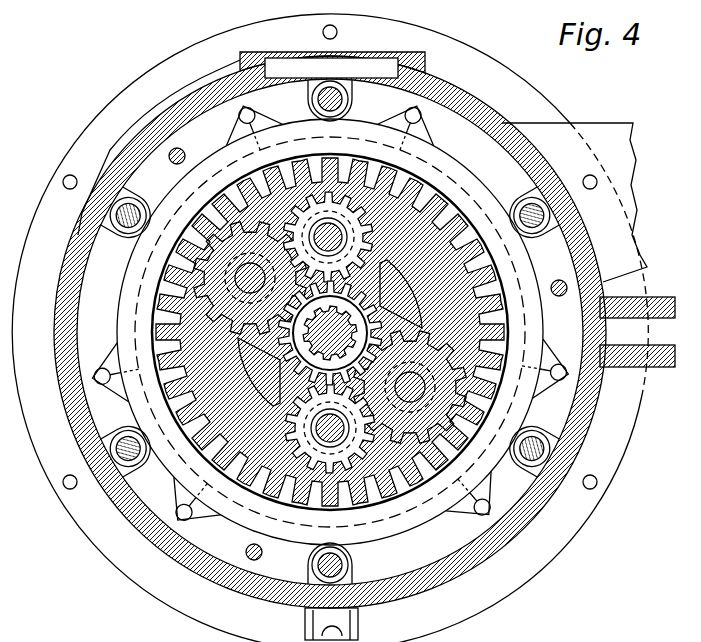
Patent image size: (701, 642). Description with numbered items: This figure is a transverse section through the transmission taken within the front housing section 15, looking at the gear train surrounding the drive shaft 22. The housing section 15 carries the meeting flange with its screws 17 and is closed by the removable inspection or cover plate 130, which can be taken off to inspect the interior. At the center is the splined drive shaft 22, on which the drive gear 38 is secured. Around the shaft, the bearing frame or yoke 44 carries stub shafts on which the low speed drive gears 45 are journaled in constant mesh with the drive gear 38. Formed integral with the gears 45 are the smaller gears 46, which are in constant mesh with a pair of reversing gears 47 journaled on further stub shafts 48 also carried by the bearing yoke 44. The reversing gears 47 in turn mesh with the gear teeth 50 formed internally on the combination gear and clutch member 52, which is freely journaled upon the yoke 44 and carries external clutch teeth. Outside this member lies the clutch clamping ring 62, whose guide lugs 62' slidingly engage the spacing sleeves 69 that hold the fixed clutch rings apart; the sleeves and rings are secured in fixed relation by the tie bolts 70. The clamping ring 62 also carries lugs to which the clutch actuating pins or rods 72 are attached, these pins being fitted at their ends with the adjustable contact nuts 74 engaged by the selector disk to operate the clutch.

The front housing section 15 is at (553, 500).
The screws 17 is at (597, 483).
The drive shaft 22 is at (349, 316).
The drive gear 38 is at (394, 318).
The bearing frame or yoke 44 is at (384, 312).
The low speed drive gears 45 is at (398, 200).
The smaller gears 46 is at (292, 437).
The reversing gears 47 is at (232, 316).
The stub shafts 48 is at (246, 286).
The internal gear teeth 50 is at (198, 434).
The combination gear and clutch member 52 is at (190, 444).
The clutch clamping ring 62 is at (315, 332).
The guide lug 62' is at (364, 332).
The spacing sleeves 69 is at (112, 218).
The tie bolts 70 is at (330, 96).
The clutch actuating pins or rods 72 is at (242, 110).
The contact nuts 74 is at (492, 624).
The inspection or cover plate 130 is at (376, 52).